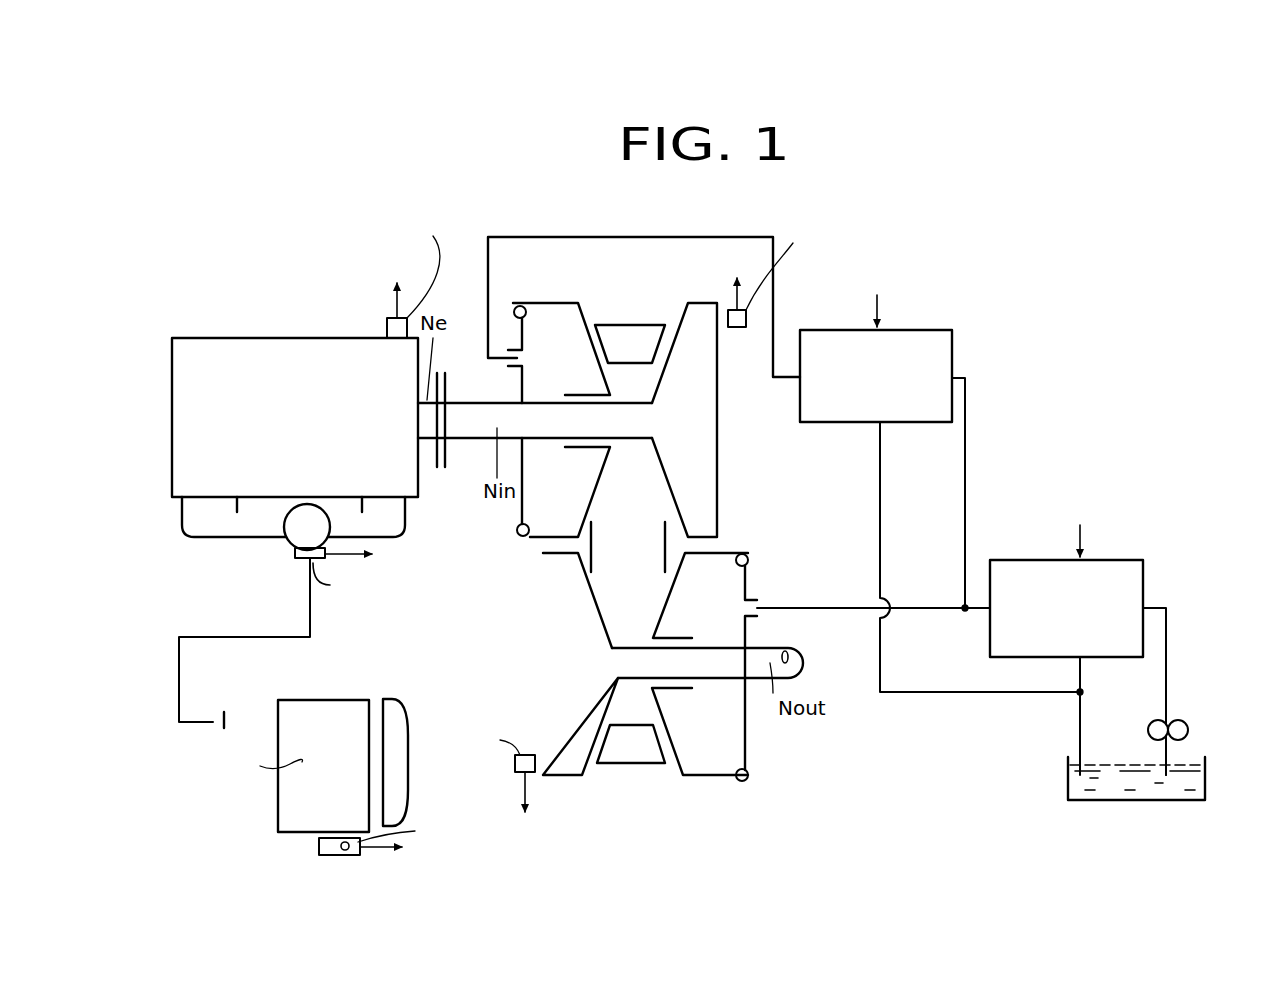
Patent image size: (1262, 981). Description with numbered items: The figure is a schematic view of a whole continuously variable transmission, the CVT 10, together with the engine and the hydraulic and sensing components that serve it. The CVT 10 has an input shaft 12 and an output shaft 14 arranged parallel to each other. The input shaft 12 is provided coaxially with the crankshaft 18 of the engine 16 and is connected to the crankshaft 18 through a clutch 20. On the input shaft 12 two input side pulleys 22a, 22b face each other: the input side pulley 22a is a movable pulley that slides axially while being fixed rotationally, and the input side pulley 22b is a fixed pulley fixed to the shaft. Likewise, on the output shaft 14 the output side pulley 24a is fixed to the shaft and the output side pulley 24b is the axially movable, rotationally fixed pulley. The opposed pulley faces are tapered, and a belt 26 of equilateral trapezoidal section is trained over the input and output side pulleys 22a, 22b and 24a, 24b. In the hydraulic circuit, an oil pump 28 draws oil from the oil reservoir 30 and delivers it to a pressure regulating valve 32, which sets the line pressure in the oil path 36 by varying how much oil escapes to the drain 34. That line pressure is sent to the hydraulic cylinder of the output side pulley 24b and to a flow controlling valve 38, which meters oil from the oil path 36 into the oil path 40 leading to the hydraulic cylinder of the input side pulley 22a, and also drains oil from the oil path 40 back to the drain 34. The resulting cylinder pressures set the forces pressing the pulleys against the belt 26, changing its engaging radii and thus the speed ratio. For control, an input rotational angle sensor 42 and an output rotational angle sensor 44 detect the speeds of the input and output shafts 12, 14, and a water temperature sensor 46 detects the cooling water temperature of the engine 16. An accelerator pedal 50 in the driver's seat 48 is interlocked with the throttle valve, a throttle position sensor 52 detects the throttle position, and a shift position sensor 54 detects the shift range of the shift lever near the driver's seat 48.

The CVT 10 is at (676, 263).
The input shaft 12 is at (470, 418).
The output shaft 14 is at (760, 668).
The engine 16 is at (258, 357).
The crankshaft 18 is at (427, 438).
The clutch 20 is at (447, 400).
The input side pulley 22a is at (551, 323).
The input side pulley 22b is at (700, 500).
The output side pulley 24a is at (571, 752).
The output side pulley 24b is at (715, 762).
The belt 26 is at (630, 350).
The oil pump 28 is at (1190, 730).
The oil reservoir 30 is at (1205, 780).
The pressure regulating valve 32 is at (1112, 560).
The drain 34 is at (1080, 728).
The oil path 36 is at (965, 522).
The flow controlling valve 38 is at (955, 358).
The oil path 40 is at (773, 277).
The input rotational angle sensor 42 is at (738, 327).
The output rotational angle sensor 44 is at (513, 764).
The water temperature sensor 46 is at (385, 322).
The driver's seat 48 is at (328, 720).
The accelerator pedal 50 is at (232, 722).
The throttle position sensor 52 is at (287, 545).
The shift position sensor 54 is at (318, 847).